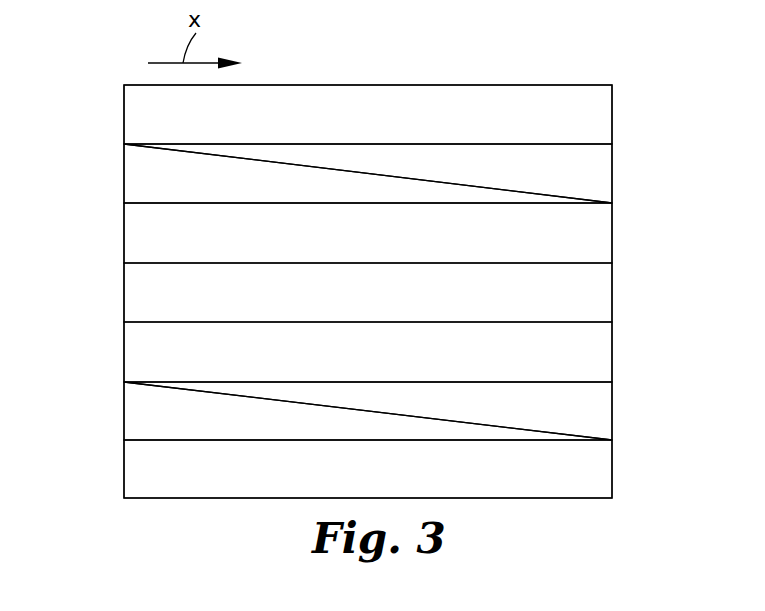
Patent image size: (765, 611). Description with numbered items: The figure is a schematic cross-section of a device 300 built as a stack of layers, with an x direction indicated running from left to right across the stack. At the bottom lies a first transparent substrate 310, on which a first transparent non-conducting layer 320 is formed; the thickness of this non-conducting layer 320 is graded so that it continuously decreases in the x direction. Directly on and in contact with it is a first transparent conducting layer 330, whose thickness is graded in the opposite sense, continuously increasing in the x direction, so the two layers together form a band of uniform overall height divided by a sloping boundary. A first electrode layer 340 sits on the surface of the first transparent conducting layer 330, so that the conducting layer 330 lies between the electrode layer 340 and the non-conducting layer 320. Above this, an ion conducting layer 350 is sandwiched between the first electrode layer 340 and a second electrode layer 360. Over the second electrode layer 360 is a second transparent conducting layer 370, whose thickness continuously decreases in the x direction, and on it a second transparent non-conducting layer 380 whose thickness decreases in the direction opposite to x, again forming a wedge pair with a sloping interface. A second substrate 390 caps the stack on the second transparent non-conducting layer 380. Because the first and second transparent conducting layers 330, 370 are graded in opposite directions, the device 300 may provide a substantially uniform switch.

The device 300 is at (601, 54).
The first transparent substrate 310 is at (603, 470).
The first transparent non-conducting layer 320 is at (137, 415).
The first transparent conducting layer 330 is at (603, 413).
The first electrode layer 340 is at (137, 358).
The ion conducting layer 350 is at (603, 295).
The second electrode layer 360 is at (137, 238).
The second transparent conducting layer 370 is at (137, 180).
The second transparent non-conducting layer 380 is at (603, 172).
The second substrate 390 is at (137, 115).